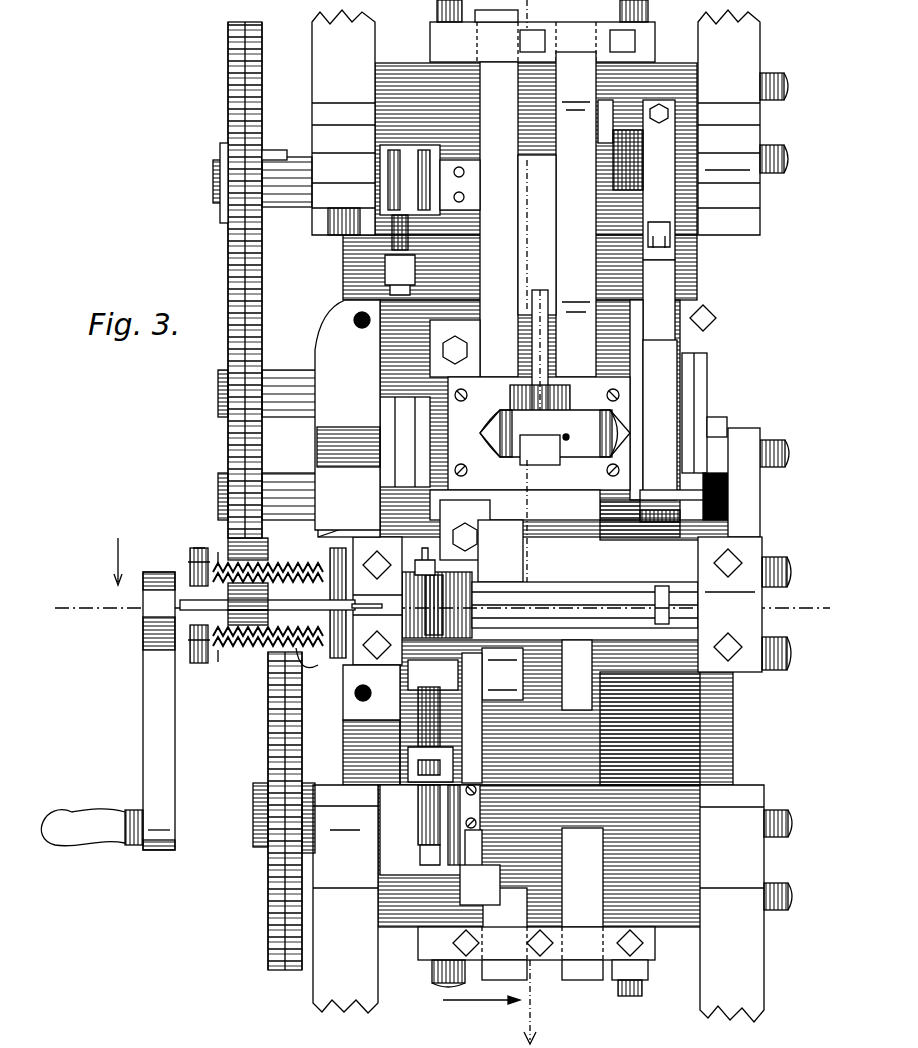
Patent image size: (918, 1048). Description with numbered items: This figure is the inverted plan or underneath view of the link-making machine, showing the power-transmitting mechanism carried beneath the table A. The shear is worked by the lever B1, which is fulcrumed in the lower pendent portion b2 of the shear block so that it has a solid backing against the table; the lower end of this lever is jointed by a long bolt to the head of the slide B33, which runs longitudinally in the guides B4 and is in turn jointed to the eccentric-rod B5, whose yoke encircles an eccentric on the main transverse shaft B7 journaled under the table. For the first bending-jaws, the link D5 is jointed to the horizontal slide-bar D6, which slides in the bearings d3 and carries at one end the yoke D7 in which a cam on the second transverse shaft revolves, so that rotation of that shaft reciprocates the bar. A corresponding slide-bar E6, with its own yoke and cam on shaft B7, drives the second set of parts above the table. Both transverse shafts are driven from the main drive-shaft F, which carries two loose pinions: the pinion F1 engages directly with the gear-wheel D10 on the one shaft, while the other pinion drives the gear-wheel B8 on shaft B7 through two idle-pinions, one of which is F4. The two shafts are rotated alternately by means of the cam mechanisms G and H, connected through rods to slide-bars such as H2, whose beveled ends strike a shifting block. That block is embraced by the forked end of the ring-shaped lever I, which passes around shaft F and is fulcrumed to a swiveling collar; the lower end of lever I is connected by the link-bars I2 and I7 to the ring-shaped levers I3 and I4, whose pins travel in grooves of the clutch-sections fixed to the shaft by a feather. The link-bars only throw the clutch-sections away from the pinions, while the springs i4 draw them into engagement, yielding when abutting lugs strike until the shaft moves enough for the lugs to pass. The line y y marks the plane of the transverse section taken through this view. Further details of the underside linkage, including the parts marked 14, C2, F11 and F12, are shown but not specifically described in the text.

The frame A is at (552, 516).
The lower pendent portion b2 is at (496, 22).
The slide-bar D6 is at (482, 728).
The slide-bar E6 is at (579, 489).
The eccentric-rod B5 is at (636, 238).
The slide B33 is at (653, 400).
The guides B4 is at (669, 389).
The block 14 is at (685, 499).
The lever B1 is at (640, 538).
The slide-bar H2 is at (430, 403).
The cam mechanism H is at (410, 220).
The main transverse shaft B7 is at (498, 235).
The link D5 is at (528, 558).
The main drive-shaft F is at (550, 593).
The section line y is at (447, 608).
The lever I is at (433, 566).
The ring-shaped lever I3 is at (349, 587).
The link-bar I2 is at (274, 597).
The link-bar I7 is at (367, 618).
The ring-shaped lever I4 is at (196, 596).
The springs i4 is at (212, 672).
The pinion F1 is at (268, 571).
The spring F12 is at (268, 647).
The gear-wheel B8 is at (251, 280).
The idle-pinion F4 is at (251, 393).
The shaft F11 is at (251, 495).
The gear-wheel D10 is at (275, 811).
The rod C2 is at (433, 721).
The cam mechanism G is at (431, 830).
The yoke D7 is at (616, 800).
The bearings d3 is at (536, 985).